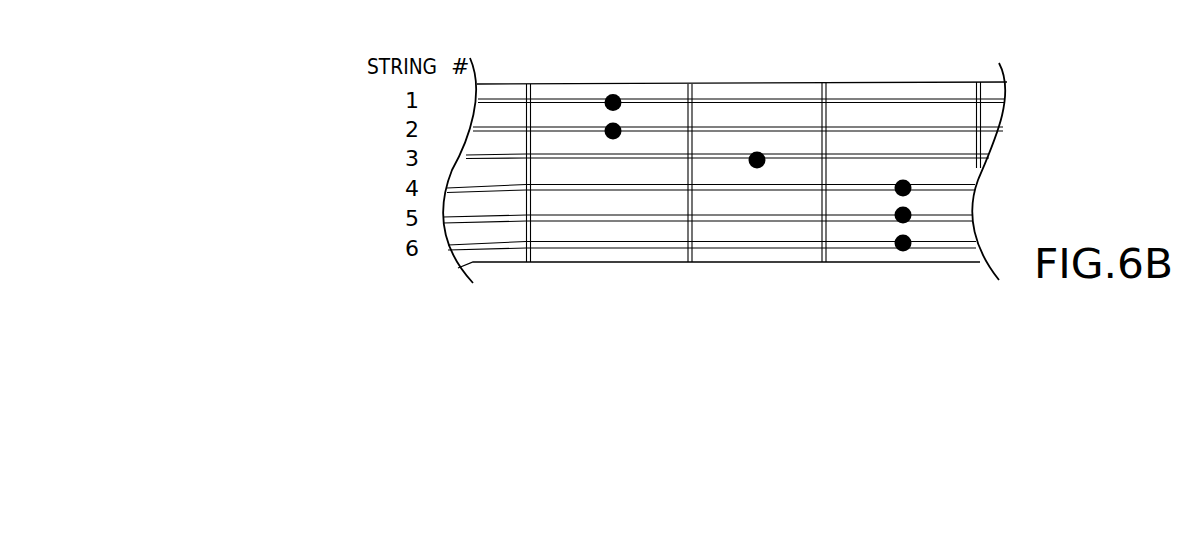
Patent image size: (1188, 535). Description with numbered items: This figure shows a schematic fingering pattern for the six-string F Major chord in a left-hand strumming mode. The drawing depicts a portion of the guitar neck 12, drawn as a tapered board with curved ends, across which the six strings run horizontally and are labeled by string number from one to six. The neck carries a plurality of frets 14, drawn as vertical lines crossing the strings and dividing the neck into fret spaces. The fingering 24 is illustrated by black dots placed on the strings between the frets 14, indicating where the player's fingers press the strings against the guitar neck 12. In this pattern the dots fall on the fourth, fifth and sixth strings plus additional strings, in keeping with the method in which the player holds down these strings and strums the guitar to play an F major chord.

The guitar neck 12 is at (771, 83).
The frets 14 is at (532, 117).
The fingering 24 is at (620, 129).